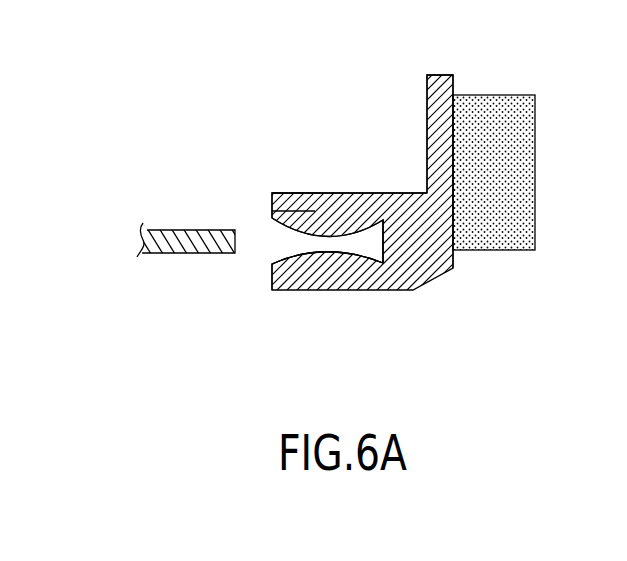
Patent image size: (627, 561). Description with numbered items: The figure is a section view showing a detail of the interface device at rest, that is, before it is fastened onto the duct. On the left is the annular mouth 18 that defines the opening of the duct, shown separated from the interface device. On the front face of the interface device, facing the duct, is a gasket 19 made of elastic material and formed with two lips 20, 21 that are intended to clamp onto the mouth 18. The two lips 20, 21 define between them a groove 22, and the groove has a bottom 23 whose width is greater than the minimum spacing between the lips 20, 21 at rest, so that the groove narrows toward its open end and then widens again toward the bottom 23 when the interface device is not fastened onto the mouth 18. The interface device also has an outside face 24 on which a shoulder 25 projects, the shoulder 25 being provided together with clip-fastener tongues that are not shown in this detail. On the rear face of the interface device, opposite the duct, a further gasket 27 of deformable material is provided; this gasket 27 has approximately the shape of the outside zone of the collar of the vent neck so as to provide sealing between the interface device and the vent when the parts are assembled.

The annular mouth 18 is at (191, 255).
The gasket 19 is at (424, 194).
The lip 20 is at (320, 275).
The lip 21 is at (271, 211).
The groove 22 is at (377, 242).
The bottom 23 is at (389, 252).
The outside face 24 is at (311, 191).
The shoulder 25 is at (424, 96).
The gasket 27 is at (507, 198).